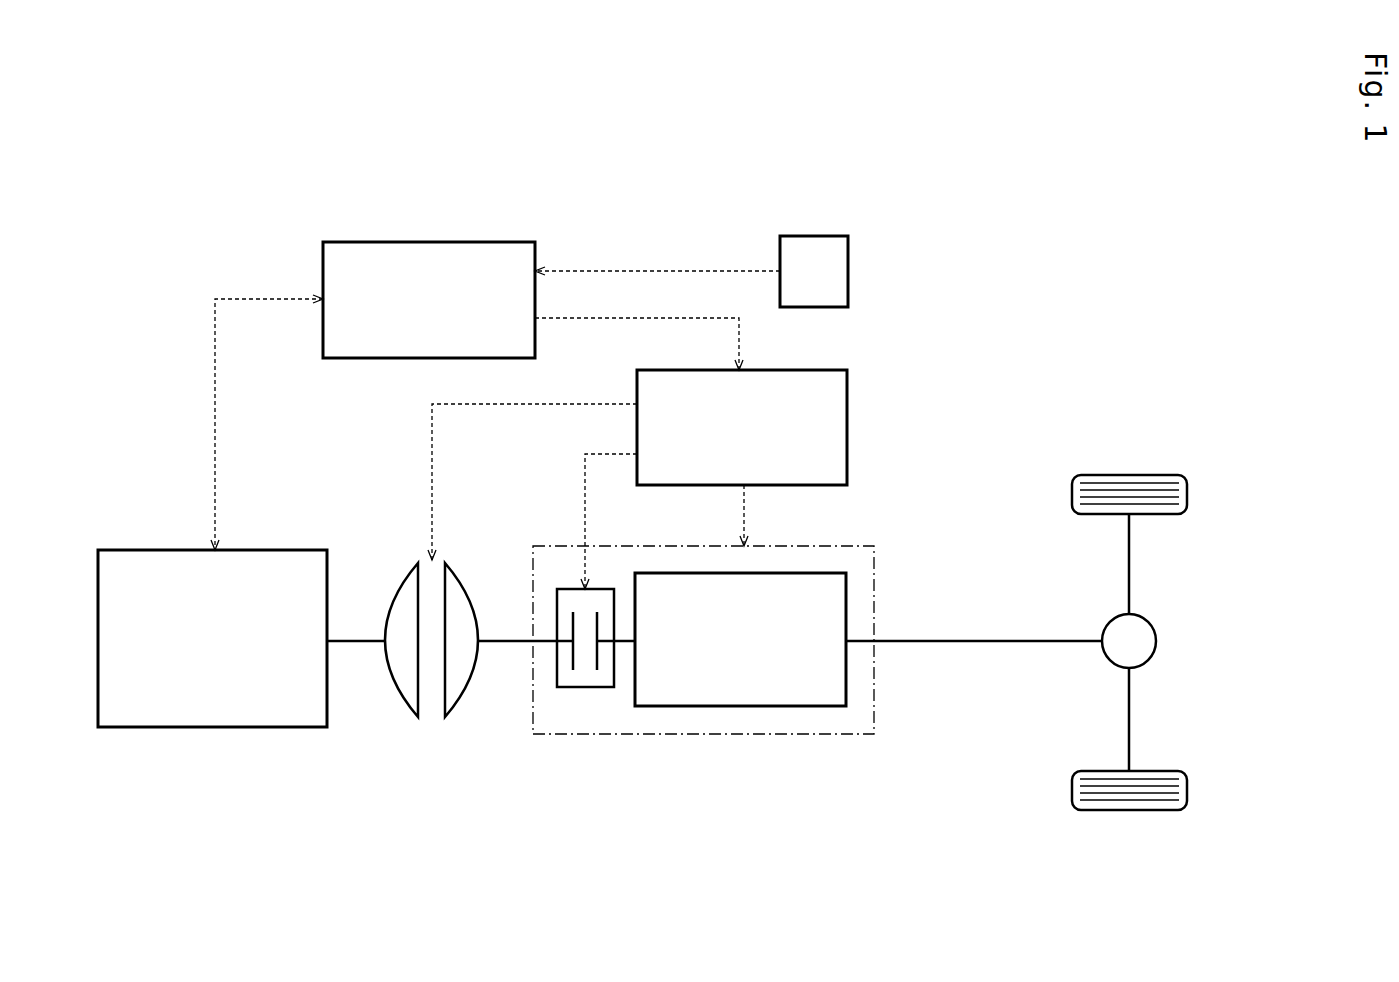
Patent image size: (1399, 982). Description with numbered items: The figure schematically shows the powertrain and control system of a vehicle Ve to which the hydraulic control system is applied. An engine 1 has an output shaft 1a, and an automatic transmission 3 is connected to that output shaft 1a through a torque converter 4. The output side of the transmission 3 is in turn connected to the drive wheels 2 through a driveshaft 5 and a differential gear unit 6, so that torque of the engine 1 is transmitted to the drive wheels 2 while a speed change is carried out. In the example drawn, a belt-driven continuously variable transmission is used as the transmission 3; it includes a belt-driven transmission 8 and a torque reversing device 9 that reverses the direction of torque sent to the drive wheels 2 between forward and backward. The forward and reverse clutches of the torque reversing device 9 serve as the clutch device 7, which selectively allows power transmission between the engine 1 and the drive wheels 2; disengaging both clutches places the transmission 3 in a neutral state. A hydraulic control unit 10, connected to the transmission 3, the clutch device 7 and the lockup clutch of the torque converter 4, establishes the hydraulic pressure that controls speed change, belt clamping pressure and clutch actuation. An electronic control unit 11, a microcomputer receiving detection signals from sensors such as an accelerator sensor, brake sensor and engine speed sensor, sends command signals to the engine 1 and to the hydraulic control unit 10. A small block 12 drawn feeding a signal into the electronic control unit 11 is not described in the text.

The engine 1 is at (220, 727).
The output shaft 1a is at (358, 641).
The drive wheels 2 is at (1130, 810).
The automatic transmission 3 is at (874, 605).
The torque converter 4 is at (435, 728).
The driveshaft 5 is at (990, 645).
The differential gear unit 6 is at (1150, 640).
The clutch device 7 is at (587, 672).
The belt-driven transmission 8 is at (748, 706).
The torque reversing device 9 is at (567, 687).
The hydraulic control unit 10 is at (845, 420).
The electronic control unit 11 is at (432, 246).
The sensor 12 is at (845, 271).
The vehicle Ve is at (1005, 335).